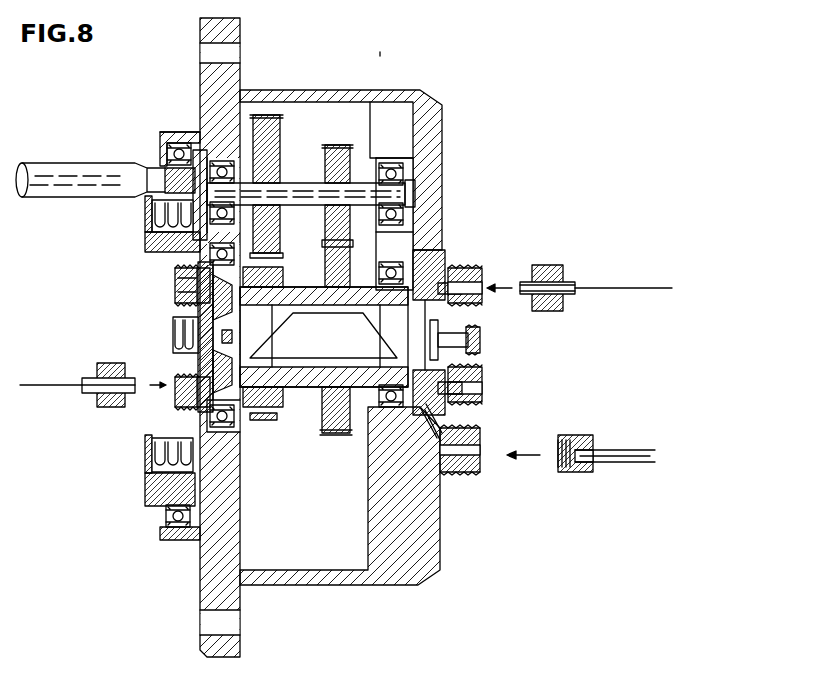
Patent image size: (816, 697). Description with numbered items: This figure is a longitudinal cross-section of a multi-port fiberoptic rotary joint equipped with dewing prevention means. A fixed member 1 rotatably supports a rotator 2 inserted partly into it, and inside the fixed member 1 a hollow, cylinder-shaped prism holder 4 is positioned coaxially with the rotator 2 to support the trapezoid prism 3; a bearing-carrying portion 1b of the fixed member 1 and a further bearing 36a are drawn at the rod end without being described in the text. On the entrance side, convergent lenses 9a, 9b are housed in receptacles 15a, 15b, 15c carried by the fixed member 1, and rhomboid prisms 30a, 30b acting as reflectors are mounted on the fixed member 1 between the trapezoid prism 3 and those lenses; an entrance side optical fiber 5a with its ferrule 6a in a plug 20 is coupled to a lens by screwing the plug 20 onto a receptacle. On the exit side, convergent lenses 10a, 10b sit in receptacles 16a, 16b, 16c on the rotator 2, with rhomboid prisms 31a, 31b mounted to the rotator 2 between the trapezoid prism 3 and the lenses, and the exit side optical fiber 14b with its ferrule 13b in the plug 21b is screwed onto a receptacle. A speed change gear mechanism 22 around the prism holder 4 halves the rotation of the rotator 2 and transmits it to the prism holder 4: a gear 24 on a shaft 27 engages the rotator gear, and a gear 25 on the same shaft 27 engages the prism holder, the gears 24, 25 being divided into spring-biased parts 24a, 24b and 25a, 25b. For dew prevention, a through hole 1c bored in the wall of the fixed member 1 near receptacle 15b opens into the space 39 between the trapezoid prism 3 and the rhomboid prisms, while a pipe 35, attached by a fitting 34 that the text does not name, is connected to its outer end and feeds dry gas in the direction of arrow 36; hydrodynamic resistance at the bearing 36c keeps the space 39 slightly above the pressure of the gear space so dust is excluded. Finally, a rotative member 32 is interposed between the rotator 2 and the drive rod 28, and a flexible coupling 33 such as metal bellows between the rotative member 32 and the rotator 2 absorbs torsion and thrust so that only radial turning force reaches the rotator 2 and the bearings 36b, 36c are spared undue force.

The fixed member 1 is at (442, 105).
The bearing holder 1b is at (167, 143).
The through hole 1c is at (445, 453).
The rotator 2 is at (160, 247).
The trapezoid prism 3 is at (300, 390).
The prism holder 4 is at (303, 285).
The entrance side optical fiber 5a is at (643, 288).
The ferrule 6a is at (527, 270).
The convergent lens 9a is at (455, 262).
The convergent lens 9b is at (455, 410).
The convergent lens 10a is at (193, 274).
The convergent lens 10b is at (187, 397).
The ferrule 13b is at (175, 380).
The exit side optical fiber 14b is at (35, 387).
The receptacle 15a is at (493, 252).
The receptacle 15b is at (482, 395).
The receptacle 15c is at (478, 345).
The receptacle 16a is at (175, 282).
The receptacle 16b is at (158, 412).
The receptacle 16c is at (173, 328).
The plug 20 is at (560, 268).
The plug 21b is at (97, 372).
The speed change gear mechanism 22 is at (380, 52).
The gear 24 is at (265, 115).
The divided gear 24a is at (250, 195).
The divided gear 24b is at (283, 125).
The gear 25 is at (357, 145).
The divided gear 25a is at (322, 150).
The divided gear 25b is at (378, 160).
The shaft 27 is at (233, 180).
The rod 28 is at (55, 167).
The rhomboid prism 30a is at (440, 268).
The rhomboid prism 30b is at (445, 425).
The rhomboid prism 31a is at (213, 312).
The rhomboid prism 31b is at (212, 365).
The rotative member 32 is at (163, 168).
The flexible coupling 33 is at (152, 222).
The nut 34 is at (582, 473).
The pipe 35 is at (612, 463).
The arrow 36 is at (532, 458).
The bearing 36a is at (165, 515).
The bearing 36b is at (230, 425).
The bearing 36c is at (297, 220).
The space 39 is at (332, 335).